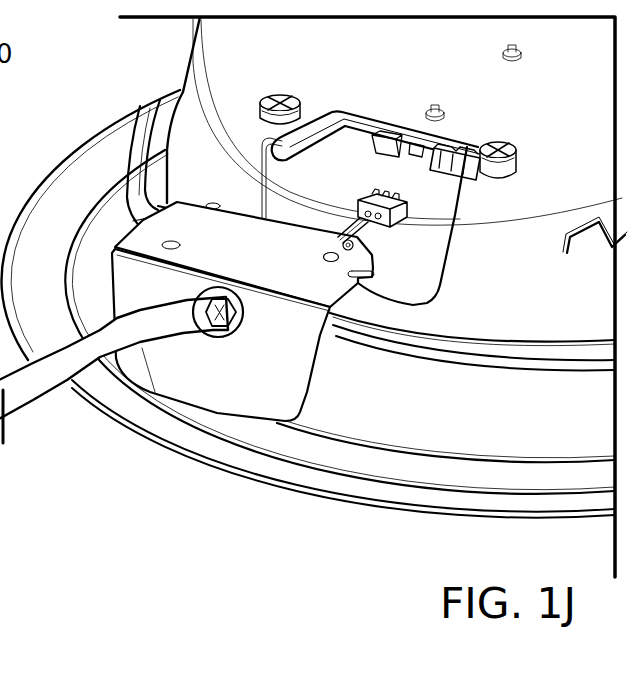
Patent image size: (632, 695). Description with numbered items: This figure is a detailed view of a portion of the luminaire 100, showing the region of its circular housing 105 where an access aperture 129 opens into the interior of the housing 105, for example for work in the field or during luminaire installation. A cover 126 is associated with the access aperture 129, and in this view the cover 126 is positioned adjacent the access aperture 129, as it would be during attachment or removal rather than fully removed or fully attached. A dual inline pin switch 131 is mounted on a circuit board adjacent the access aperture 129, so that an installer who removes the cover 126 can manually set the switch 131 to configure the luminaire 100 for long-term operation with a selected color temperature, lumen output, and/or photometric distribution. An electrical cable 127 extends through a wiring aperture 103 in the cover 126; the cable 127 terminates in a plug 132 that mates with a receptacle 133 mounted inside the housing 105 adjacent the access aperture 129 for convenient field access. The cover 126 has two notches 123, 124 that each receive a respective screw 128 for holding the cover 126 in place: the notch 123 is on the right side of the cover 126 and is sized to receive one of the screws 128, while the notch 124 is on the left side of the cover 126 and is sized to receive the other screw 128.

The luminaire 100 is at (191, 505).
The wiring aperture 103 is at (262, 330).
The housing 105 is at (535, 424).
The notch 123 is at (397, 284).
The notch 124 is at (127, 187).
The cover 126 is at (228, 379).
The electrical cable 127 is at (24, 397).
The screw 128 is at (318, 68).
The access aperture 129 is at (385, 186).
The dual inline pin (DIP) switch 131 is at (393, 101).
The plug 132 is at (434, 208).
The receptacle 133 is at (463, 198).